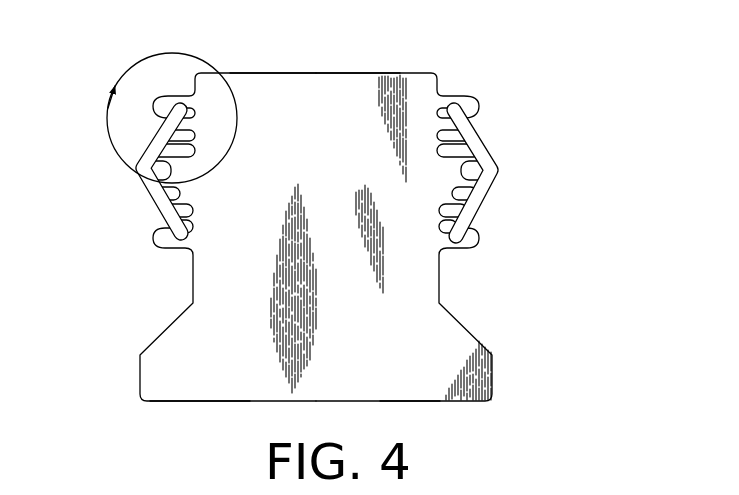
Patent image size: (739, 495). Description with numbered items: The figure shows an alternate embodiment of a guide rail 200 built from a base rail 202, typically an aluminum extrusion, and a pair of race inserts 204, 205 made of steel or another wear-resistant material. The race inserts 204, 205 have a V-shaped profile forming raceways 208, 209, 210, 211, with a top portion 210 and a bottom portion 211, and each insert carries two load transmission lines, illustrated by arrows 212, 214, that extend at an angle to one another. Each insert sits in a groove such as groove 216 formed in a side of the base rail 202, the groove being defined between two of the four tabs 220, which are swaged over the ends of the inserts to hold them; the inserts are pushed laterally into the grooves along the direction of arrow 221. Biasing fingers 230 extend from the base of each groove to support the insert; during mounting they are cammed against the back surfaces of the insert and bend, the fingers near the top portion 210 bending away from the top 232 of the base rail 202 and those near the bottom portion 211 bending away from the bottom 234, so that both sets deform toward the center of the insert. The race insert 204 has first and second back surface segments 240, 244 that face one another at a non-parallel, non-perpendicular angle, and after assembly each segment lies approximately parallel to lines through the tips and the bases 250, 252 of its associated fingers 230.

The guide rail 200 is at (480, 33).
The base rail 202 is at (412, 392).
The race insert 204 is at (155, 57).
The race insert 205 is at (455, 112).
The raceway 208 is at (152, 135).
The raceway 209 is at (150, 208).
The top portion of race insert 210 is at (485, 137).
The bottom portion of race insert 211 is at (478, 213).
The load transmission line 212 is at (514, 88).
The load transmission line 214 is at (521, 254).
The groove 216 is at (110, 174).
The tab 220 is at (157, 105).
The direction of insertion arrow 221 is at (520, 170).
The biasing finger 230 is at (190, 218).
The top of base rail 232 is at (310, 72).
The bottom of base rail 234 is at (180, 402).
The first back surface segment 240 is at (180, 113).
The second back surface segment 244 is at (182, 203).
The bases of fingers 250 is at (196, 148).
The bases of fingers 252 is at (193, 187).